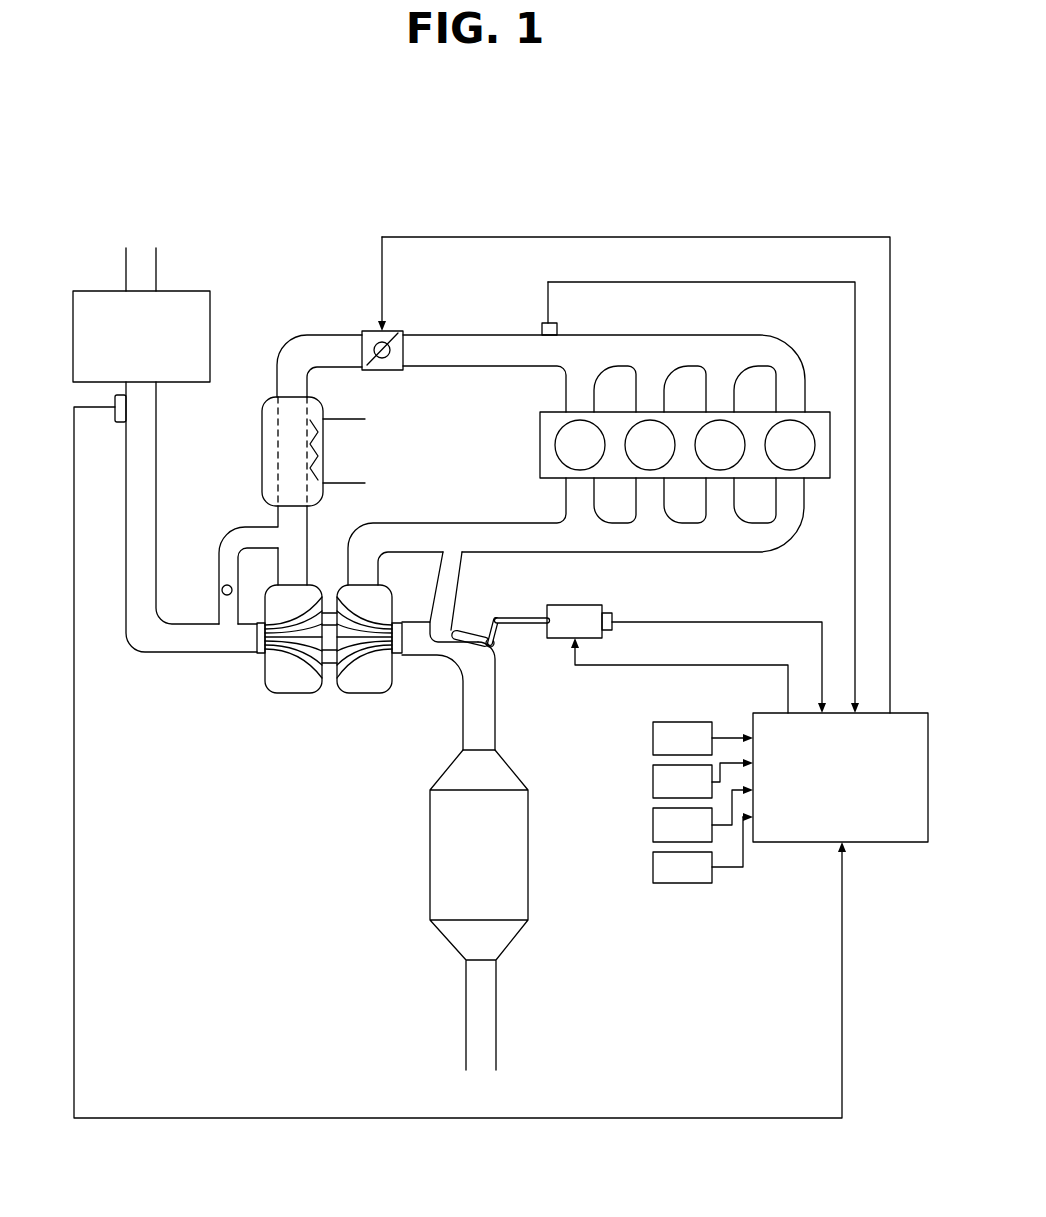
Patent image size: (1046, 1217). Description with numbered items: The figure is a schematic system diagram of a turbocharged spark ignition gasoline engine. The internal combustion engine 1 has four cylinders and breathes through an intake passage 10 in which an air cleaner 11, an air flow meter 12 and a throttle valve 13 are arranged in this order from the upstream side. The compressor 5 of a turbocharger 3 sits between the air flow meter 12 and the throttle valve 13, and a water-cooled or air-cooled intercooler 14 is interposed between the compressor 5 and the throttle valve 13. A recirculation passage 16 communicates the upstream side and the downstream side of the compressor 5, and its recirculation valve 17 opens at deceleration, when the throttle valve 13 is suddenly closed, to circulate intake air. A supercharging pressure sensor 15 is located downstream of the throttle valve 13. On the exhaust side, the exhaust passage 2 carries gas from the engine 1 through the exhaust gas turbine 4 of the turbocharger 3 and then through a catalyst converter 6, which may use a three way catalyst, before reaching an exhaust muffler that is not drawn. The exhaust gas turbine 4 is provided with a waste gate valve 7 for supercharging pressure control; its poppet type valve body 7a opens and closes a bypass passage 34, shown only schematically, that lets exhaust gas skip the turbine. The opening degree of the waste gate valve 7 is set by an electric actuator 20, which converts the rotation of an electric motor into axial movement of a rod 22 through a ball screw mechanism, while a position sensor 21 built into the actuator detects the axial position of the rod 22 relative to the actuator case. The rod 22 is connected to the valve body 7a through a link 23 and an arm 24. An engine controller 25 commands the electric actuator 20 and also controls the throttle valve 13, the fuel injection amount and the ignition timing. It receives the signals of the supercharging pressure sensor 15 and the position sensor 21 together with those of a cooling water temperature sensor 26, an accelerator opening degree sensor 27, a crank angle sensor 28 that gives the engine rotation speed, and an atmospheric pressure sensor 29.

The internal combustion engine 1 is at (818, 417).
The exhaust passage 2 is at (737, 542).
The turbocharger 3 is at (329, 685).
The exhaust gas turbine 4 is at (367, 682).
The compressor 5 is at (292, 682).
The catalyst converter 6 is at (435, 865).
The waste gate valve 7 is at (508, 667).
The valve body 7a is at (430, 647).
The intake passage 10 is at (290, 352).
The air cleaner 11 is at (183, 297).
The air flow meter 12 is at (118, 415).
The throttle valve 13 is at (366, 343).
The intercooler 14 is at (268, 445).
The supercharging pressure sensor 15 is at (542, 330).
The recirculation passage 16 is at (258, 533).
The recirculation valve 17 is at (222, 588).
The electric actuator 20 is at (567, 610).
The position sensor 21 is at (608, 615).
The rod 22 is at (511, 615).
The link 23 is at (496, 634).
The arm 24 is at (460, 640).
The engine controller 25 is at (785, 837).
The cooling water temperature sensor 26 is at (653, 737).
The accelerator opening degree sensor 27 is at (653, 781).
The crank angle sensor 28 is at (653, 826).
The atmospheric pressure sensor 29 is at (653, 868).
The bypass passage 34 is at (443, 590).